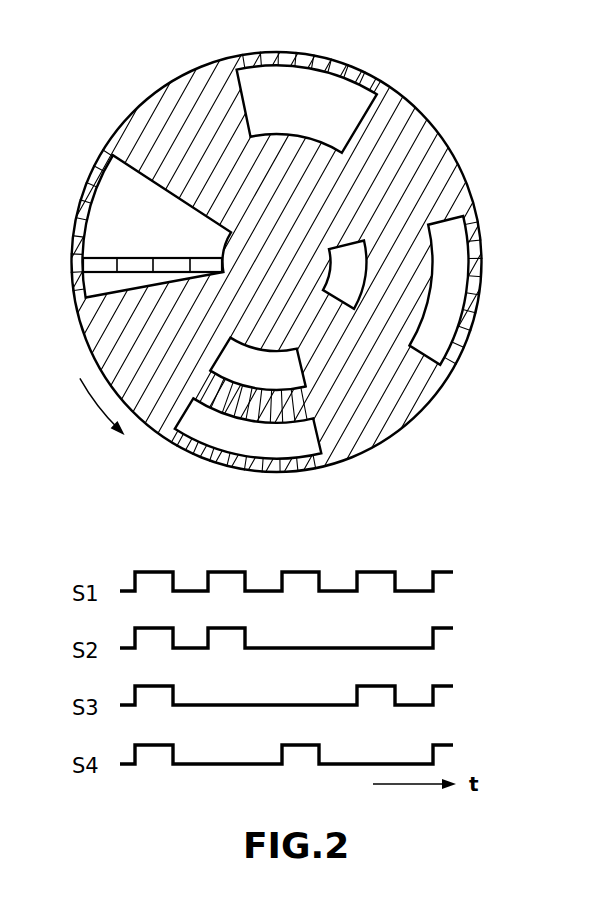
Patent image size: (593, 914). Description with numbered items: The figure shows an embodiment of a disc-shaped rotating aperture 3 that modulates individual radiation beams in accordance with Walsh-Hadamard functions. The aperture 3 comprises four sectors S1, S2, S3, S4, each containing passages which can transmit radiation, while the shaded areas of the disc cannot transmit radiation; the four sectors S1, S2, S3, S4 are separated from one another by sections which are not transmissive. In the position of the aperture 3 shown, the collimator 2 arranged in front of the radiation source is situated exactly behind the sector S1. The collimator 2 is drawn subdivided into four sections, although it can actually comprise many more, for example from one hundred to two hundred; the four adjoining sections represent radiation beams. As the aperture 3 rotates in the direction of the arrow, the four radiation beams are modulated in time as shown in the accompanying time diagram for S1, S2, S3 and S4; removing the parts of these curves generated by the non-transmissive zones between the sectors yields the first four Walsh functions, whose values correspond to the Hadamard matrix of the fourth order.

The first sector S1 is at (107, 224).
The second sector S2 is at (313, 80).
The third sector S3 is at (440, 302).
The fourth sector S4 is at (252, 445).
The collimator 2 is at (107, 268).
The aperture 3 is at (431, 394).